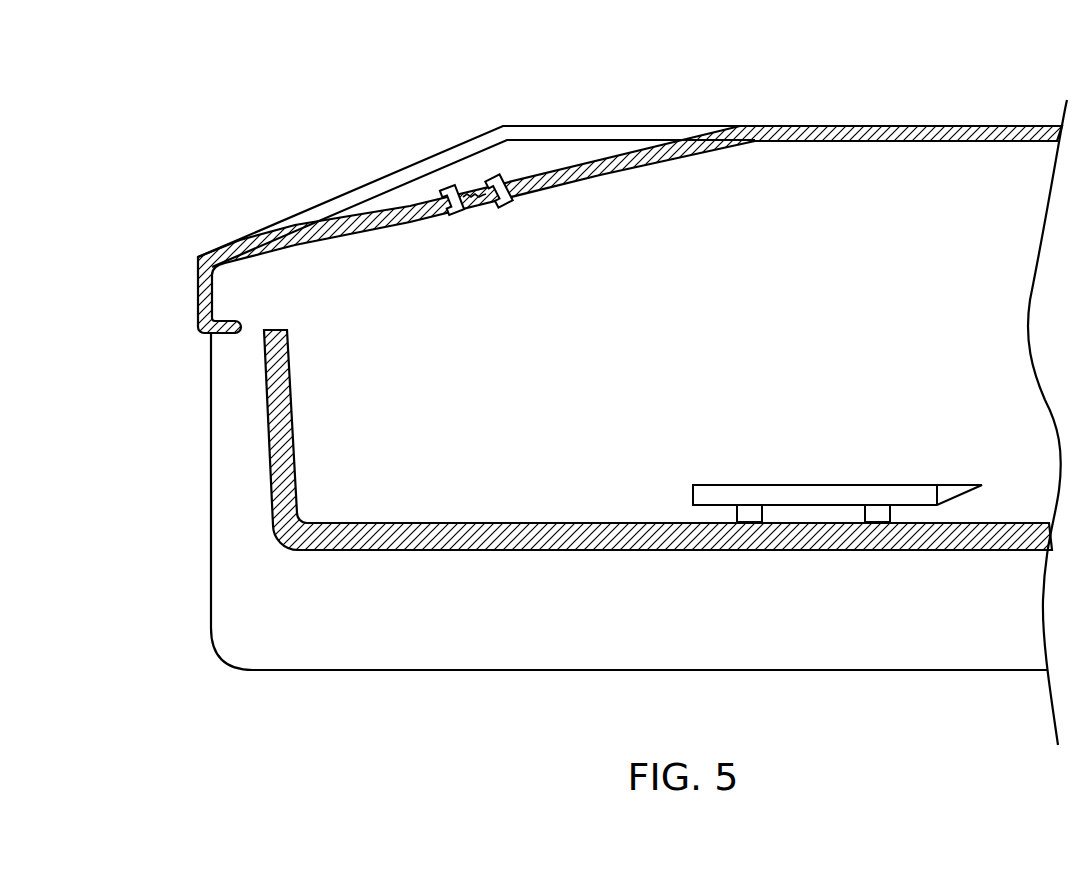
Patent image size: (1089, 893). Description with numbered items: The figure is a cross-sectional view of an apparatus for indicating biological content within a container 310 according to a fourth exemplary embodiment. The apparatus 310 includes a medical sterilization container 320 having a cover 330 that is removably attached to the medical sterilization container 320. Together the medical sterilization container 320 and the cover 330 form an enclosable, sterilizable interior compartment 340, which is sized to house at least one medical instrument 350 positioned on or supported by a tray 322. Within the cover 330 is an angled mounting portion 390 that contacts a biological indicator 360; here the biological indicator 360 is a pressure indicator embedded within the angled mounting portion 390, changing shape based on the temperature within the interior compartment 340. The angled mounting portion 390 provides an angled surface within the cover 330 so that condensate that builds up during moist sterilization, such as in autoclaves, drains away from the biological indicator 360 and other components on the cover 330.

The apparatus for indicating biological content within a container 310 is at (943, 41).
The medical sterilization container 320 is at (211, 460).
The tray 322 is at (283, 542).
The cover 330 is at (198, 257).
The interior compartment 340 is at (353, 640).
The medical instrument 350 is at (788, 500).
The biological indicator 360 is at (500, 178).
The angled mounting portion 390 is at (593, 162).